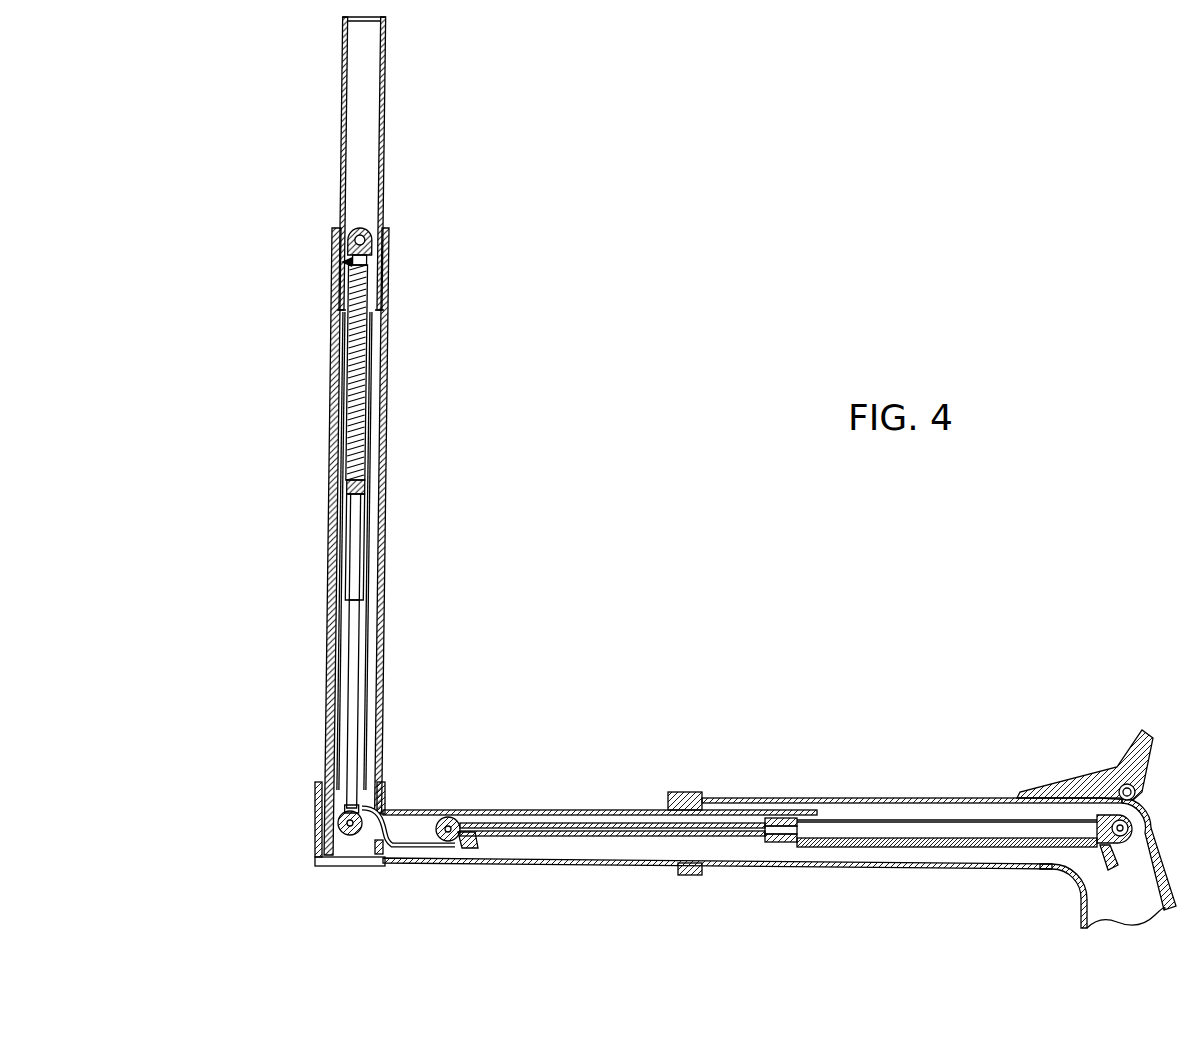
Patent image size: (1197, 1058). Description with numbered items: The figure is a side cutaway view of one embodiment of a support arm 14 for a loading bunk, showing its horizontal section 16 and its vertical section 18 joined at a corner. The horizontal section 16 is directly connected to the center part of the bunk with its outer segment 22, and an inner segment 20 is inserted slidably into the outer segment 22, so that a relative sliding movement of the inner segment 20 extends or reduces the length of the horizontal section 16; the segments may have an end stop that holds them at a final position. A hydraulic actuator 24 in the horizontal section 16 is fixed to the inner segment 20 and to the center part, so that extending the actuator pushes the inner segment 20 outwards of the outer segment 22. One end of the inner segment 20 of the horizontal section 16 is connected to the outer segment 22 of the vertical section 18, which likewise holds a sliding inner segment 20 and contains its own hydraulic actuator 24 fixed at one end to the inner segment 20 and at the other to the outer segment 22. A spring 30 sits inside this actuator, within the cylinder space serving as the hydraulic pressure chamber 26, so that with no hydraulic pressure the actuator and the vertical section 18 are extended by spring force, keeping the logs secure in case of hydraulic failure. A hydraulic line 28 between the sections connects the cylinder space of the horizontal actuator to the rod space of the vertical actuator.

The support arm 14 is at (244, 132).
The horizontal section 16 is at (562, 810).
The vertical section 18 is at (389, 371).
The inner segment 20 is at (388, 115).
The outer segment 22 is at (328, 658).
The hydraulic actuator 24 is at (367, 482).
The hydraulic pressure chamber 26 is at (368, 413).
The hydraulic line 28 is at (405, 833).
The spring 30 is at (370, 333).